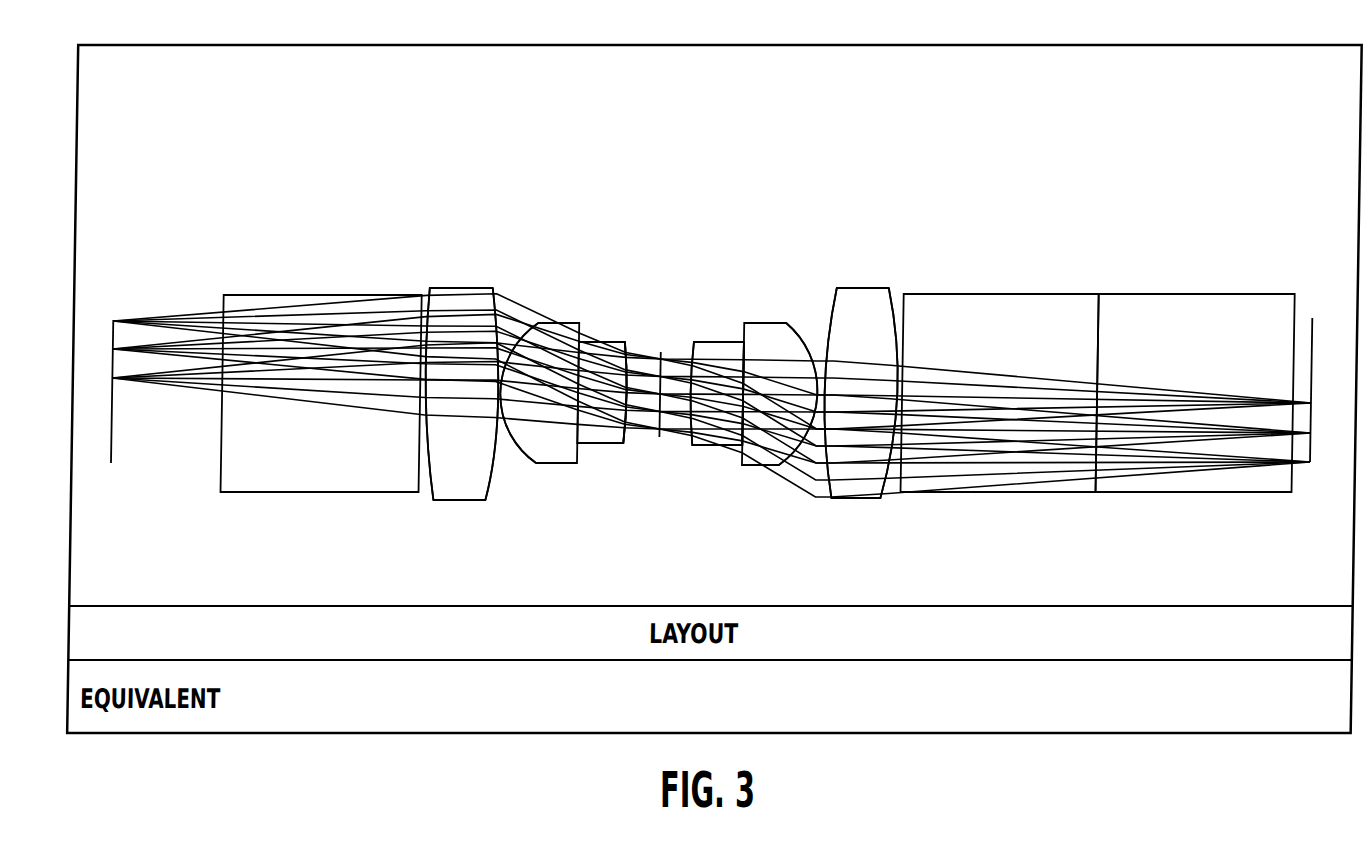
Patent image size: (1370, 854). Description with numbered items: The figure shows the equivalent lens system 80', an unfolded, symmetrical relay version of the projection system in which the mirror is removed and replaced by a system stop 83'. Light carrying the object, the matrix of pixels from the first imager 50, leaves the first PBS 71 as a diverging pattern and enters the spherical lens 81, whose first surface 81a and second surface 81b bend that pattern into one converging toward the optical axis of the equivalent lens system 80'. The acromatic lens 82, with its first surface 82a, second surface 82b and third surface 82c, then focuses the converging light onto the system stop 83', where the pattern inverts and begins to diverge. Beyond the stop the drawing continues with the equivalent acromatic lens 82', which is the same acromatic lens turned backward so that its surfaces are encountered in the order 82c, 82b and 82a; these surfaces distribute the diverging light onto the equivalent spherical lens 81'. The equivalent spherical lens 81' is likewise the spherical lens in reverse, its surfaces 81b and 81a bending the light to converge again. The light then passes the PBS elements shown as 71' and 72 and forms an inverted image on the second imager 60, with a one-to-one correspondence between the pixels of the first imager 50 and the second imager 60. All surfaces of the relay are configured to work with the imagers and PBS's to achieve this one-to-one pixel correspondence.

The equivalent lens system 80' is at (714, 360).
The first imager 50 is at (112, 455).
The first PBS 71 is at (319, 436).
The spherical lens 81 is at (461, 443).
The first surface 81a is at (430, 493).
The second surface 81b is at (488, 493).
The acromatic lens 82 is at (563, 438).
The first surface 82a is at (527, 465).
The second surface 82b is at (578, 457).
The third surface 82c is at (627, 440).
The system stop 83' is at (626, 346).
The equivalent acromatic lens 82' is at (754, 337).
The equivalent spherical lens 81' is at (864, 333).
The first PBS (equivalent position) 71' is at (1001, 341).
The second imager / second PBS 72 is at (1188, 294).
The second imager 60 is at (1312, 318).